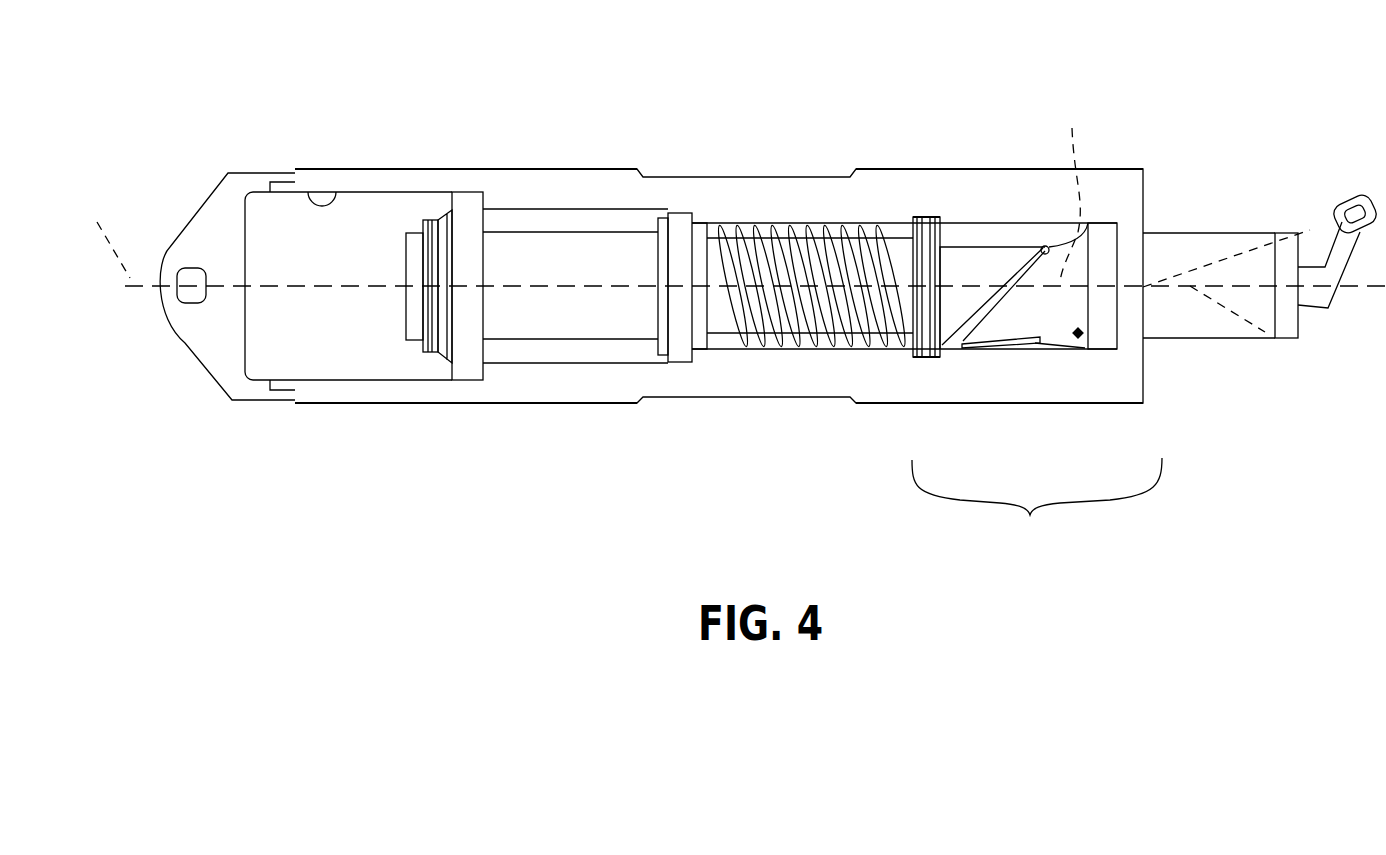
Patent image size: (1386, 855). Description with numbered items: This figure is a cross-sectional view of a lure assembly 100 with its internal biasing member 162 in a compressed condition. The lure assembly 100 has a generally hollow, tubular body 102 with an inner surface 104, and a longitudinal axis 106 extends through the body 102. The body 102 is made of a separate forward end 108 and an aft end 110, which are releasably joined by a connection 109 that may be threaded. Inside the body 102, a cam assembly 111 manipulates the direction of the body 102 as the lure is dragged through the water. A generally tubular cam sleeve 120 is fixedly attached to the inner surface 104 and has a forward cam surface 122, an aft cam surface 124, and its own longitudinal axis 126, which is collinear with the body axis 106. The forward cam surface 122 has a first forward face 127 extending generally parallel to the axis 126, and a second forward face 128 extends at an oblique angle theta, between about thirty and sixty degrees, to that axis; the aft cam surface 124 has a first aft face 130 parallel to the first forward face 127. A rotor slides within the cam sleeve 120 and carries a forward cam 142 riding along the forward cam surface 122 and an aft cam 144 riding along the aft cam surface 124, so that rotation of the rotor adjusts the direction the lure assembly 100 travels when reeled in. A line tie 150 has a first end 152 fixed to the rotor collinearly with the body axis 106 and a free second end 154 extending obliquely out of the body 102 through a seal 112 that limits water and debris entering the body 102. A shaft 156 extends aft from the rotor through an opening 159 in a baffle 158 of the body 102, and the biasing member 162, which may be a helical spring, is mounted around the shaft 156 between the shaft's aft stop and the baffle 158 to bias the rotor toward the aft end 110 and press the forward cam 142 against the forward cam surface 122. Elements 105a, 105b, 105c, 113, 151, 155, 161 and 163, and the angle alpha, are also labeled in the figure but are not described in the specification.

The lure assembly 100 is at (769, 36).
The hollow body 102 is at (512, 168).
The inner surface 104 is at (337, 196).
The first housing bore section 105a is at (752, 223).
The second housing bore section 105b is at (577, 208).
The third housing bore section 105c is at (385, 192).
The longitudinal axis 106 is at (1268, 357).
The forward end 108 is at (1145, 178).
The connection 109 is at (278, 178).
The aft end 110 is at (226, 191).
The cam assembly 111 is at (1037, 503).
The seal 112 is at (192, 268).
The end plug 113 is at (1103, 226).
The cam sleeve 120 is at (1015, 234).
The forward cam surface 122 is at (992, 322).
The aft cam surface 124 is at (960, 247).
The longitudinal axis 126 is at (1213, 395).
The first forward face 127 is at (972, 346).
The second forward face 128 is at (1045, 252).
The first aft face 130 is at (980, 247).
The forward cam 142 is at (1081, 335).
The aft cam 144 is at (1046, 256).
The line tie 150 is at (1327, 307).
The ring aperture 151 is at (1375, 198).
The first end 152 is at (1290, 243).
The second end 154 is at (1343, 200).
The nut 155 is at (922, 216).
The shaft 156 is at (416, 330).
The baffle 158 is at (678, 231).
The opening 159 is at (703, 223).
The seal 161 is at (661, 358).
The biasing member 162 is at (785, 350).
The flange 163 is at (470, 204).
The oblique angle theta is at (1008, 322).
The angle alpha is at (1200, 287).